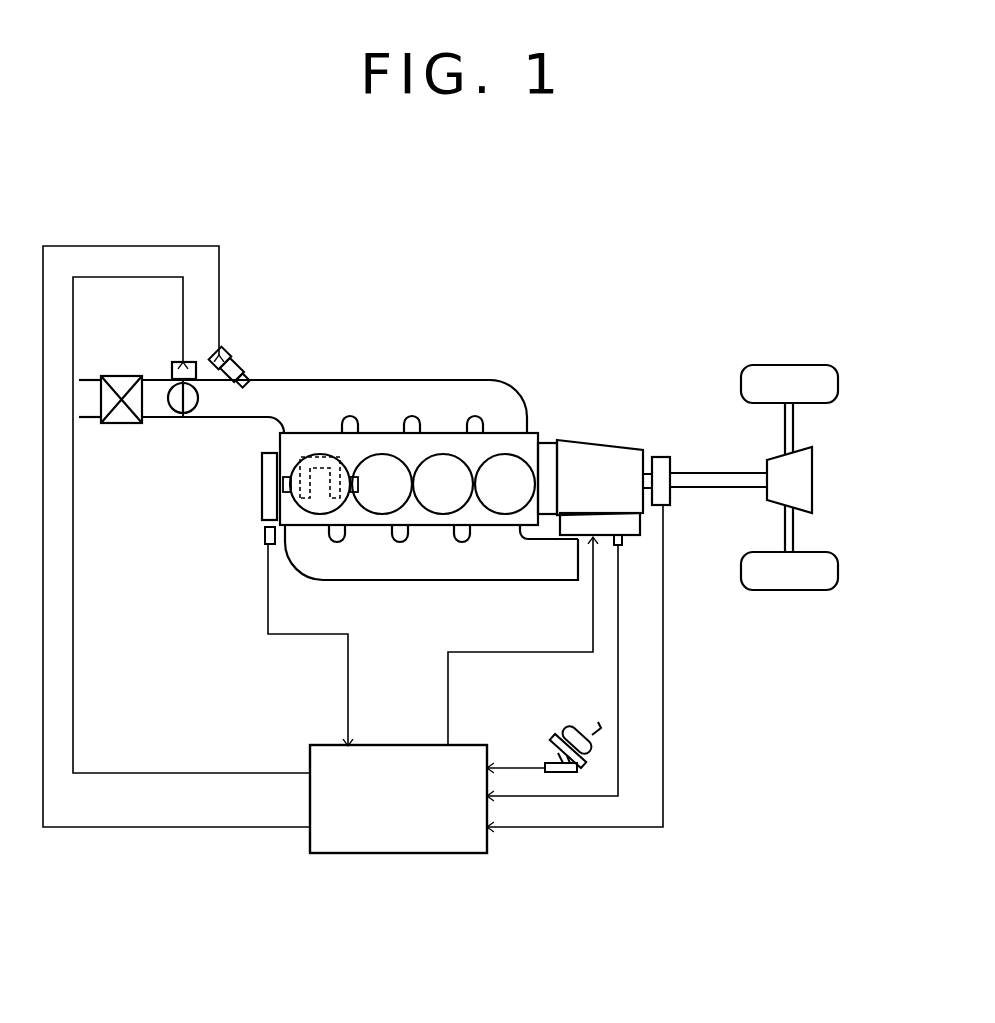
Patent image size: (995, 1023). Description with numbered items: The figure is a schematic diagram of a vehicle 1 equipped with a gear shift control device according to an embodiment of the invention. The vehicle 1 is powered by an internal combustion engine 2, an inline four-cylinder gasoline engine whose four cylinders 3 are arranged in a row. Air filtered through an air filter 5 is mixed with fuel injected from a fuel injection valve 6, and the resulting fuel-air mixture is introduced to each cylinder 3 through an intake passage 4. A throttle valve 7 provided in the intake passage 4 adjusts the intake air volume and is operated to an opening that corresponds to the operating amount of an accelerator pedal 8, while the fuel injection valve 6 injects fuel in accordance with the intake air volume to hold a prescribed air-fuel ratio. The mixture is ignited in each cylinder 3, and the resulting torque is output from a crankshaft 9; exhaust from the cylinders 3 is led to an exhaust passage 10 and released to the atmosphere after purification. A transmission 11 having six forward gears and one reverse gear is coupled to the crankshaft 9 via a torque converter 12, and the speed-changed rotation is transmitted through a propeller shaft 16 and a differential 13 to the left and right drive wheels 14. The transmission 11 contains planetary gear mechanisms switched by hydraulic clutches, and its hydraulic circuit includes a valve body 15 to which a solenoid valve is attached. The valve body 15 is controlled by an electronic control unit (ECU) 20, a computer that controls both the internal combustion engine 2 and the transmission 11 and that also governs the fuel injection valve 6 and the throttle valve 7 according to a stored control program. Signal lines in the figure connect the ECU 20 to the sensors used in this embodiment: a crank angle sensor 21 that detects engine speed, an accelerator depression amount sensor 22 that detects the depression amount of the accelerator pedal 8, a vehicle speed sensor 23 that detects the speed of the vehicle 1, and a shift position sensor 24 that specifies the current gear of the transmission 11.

The vehicle 1 is at (594, 295).
The internal combustion engine 2 is at (421, 359).
The cylinders 3 is at (452, 500).
The intake passage 4 is at (310, 390).
The air filter 5 is at (122, 376).
The fuel injection valve 6 is at (239, 356).
The throttle valve 7 is at (171, 396).
The accelerator pedal 8 is at (555, 737).
The crankshaft 9 is at (262, 485).
The exhaust passage 10 is at (417, 567).
The transmission 11 is at (600, 440).
The torque converter 12 is at (552, 442).
The differential 13 is at (807, 480).
The drive wheels 14 is at (816, 372).
The valve body 15 is at (578, 539).
The propeller shaft 16 is at (748, 472).
The electronic control unit (ECU) 20 is at (327, 746).
The crank angle sensor 21 is at (265, 533).
The accelerator depression amount sensor 22 is at (545, 765).
The vehicle speed sensor 23 is at (622, 548).
The shift position sensor 24 is at (661, 457).